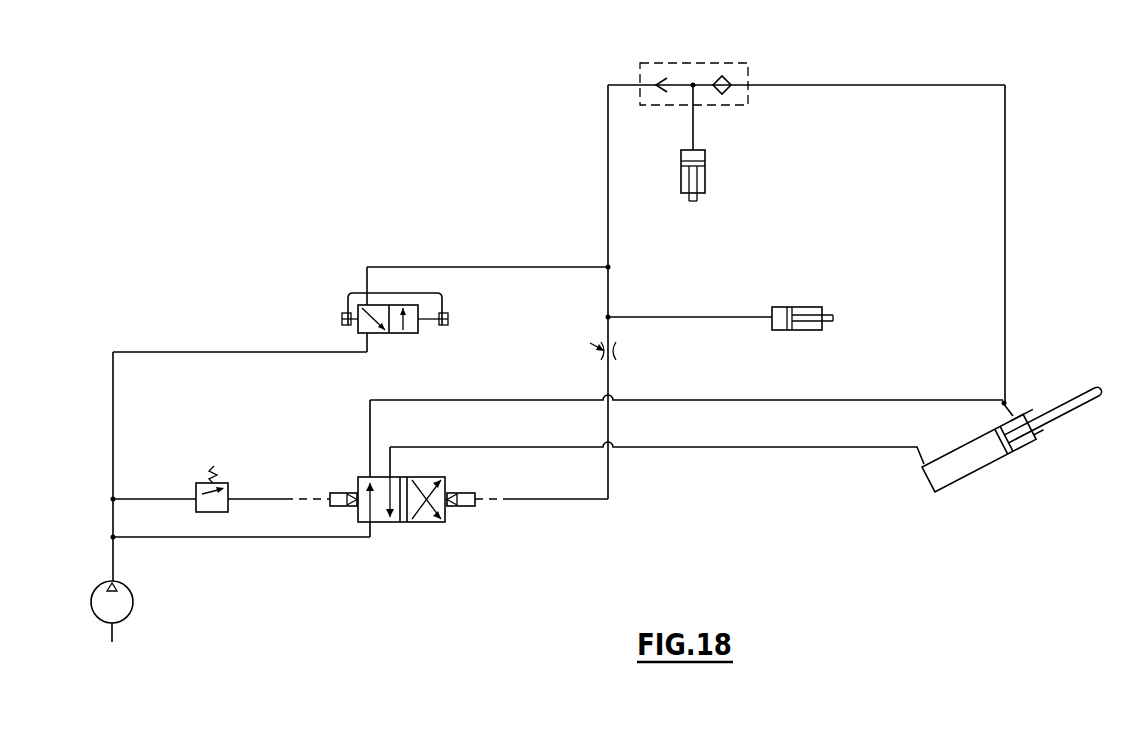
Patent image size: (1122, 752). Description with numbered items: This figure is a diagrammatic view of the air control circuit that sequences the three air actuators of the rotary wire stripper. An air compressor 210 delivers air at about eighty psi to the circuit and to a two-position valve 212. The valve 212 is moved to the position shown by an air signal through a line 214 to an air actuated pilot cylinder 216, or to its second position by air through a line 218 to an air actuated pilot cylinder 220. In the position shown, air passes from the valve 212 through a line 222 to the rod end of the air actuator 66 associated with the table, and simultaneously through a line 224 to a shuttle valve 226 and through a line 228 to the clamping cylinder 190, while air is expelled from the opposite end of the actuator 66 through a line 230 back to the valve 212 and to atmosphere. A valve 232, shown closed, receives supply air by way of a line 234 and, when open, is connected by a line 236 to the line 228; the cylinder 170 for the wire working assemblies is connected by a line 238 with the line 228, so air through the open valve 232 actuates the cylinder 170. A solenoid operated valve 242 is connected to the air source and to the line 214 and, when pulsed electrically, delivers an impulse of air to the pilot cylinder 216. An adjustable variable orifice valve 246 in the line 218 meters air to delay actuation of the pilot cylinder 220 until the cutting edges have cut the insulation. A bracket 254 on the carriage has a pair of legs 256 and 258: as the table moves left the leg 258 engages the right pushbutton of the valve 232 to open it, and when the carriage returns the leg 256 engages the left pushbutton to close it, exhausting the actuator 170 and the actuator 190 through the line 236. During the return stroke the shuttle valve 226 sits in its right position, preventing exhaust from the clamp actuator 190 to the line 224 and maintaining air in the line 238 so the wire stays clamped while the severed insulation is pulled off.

The air actuator 66 is at (960, 492).
The cylinder 170 is at (811, 331).
The clamping cylinder 190 is at (703, 188).
The air compressor 210 is at (136, 602).
The two-position valve 212 is at (447, 521).
The line 214 is at (253, 498).
The air actuated pilot cylinder 216 is at (344, 492).
The line 218 is at (601, 503).
The air actuated pilot cylinder 220 is at (459, 492).
The line 222 is at (755, 401).
The line 224 is at (1006, 212).
The shuttle valve 226 is at (735, 63).
The line 228 is at (694, 140).
The line 230 is at (826, 448).
The valve 232 is at (412, 333).
The line 234 is at (215, 352).
The line 236 is at (490, 267).
The line 238 is at (708, 317).
The solenoid operated valve 242 is at (200, 484).
The adjustable variable orifice valve 246 is at (616, 353).
The bracket 254 is at (450, 300).
The leg 256 is at (342, 302).
The leg 258 is at (455, 320).